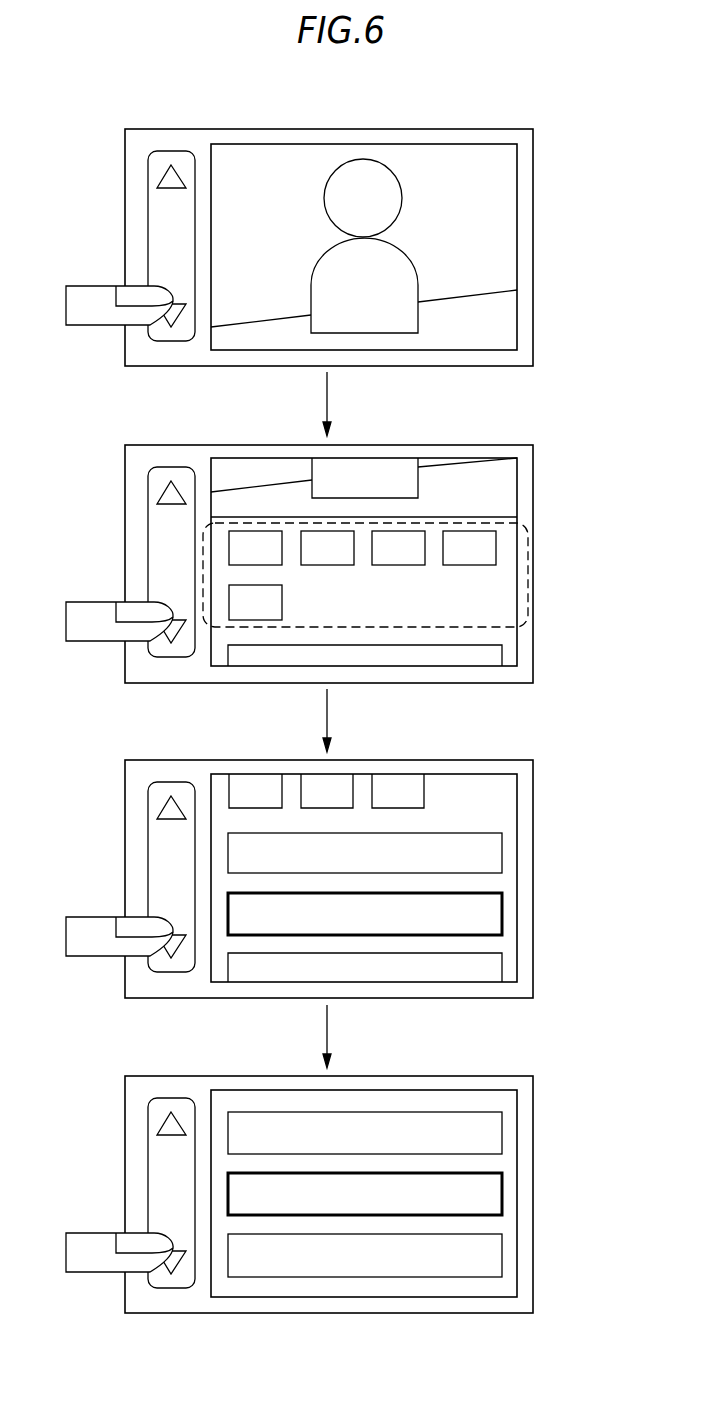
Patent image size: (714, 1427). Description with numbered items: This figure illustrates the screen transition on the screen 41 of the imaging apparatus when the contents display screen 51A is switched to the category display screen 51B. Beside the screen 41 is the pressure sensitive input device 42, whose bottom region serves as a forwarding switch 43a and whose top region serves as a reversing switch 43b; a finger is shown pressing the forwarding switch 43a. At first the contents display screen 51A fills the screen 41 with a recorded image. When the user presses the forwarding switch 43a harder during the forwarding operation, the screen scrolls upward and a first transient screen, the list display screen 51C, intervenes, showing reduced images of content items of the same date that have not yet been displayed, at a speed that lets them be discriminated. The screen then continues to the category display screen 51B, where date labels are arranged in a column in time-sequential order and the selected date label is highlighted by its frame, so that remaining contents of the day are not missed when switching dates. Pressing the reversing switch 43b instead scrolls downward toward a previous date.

The screen 41 is at (502, 160).
The pressure sensitive input device 42 is at (176, 152).
The forwarding switch 43a is at (166, 320).
The reversing switch 43b is at (163, 170).
The contents display screen 51A is at (333, 160).
The category display screen 51B is at (505, 653).
The list display screen 51C is at (505, 580).